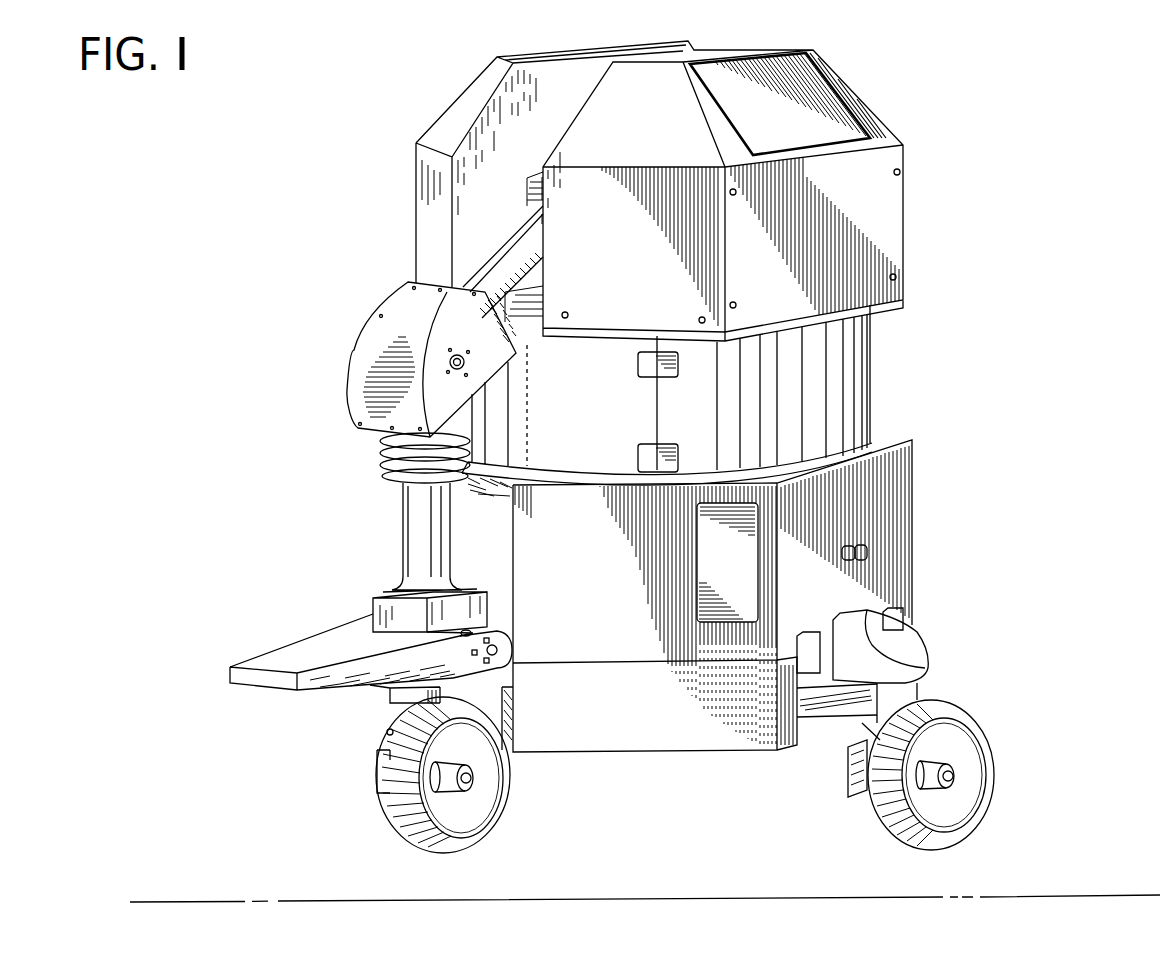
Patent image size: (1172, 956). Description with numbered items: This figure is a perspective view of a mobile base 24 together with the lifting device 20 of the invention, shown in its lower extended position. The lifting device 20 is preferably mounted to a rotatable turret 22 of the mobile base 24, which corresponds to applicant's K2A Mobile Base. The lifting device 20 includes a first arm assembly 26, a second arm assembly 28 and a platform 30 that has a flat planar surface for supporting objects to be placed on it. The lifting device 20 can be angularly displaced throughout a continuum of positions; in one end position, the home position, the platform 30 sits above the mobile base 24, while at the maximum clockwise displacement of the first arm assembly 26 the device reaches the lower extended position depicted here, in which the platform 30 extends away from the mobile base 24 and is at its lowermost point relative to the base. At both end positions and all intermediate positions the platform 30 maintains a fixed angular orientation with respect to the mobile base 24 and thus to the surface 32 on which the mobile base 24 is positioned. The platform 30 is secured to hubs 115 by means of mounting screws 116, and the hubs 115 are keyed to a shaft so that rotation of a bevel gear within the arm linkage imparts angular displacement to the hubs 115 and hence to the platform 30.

The lifting device 20 is at (380, 305).
The rotatable turret 22 is at (837, 77).
The mobile base 24 is at (877, 382).
The first arm assembly 26 is at (510, 253).
The second arm assembly 28 is at (412, 515).
The platform 30 is at (307, 655).
The surface 32 is at (220, 878).
The hubs 115 is at (373, 620).
The mounting screws 116 is at (503, 648).